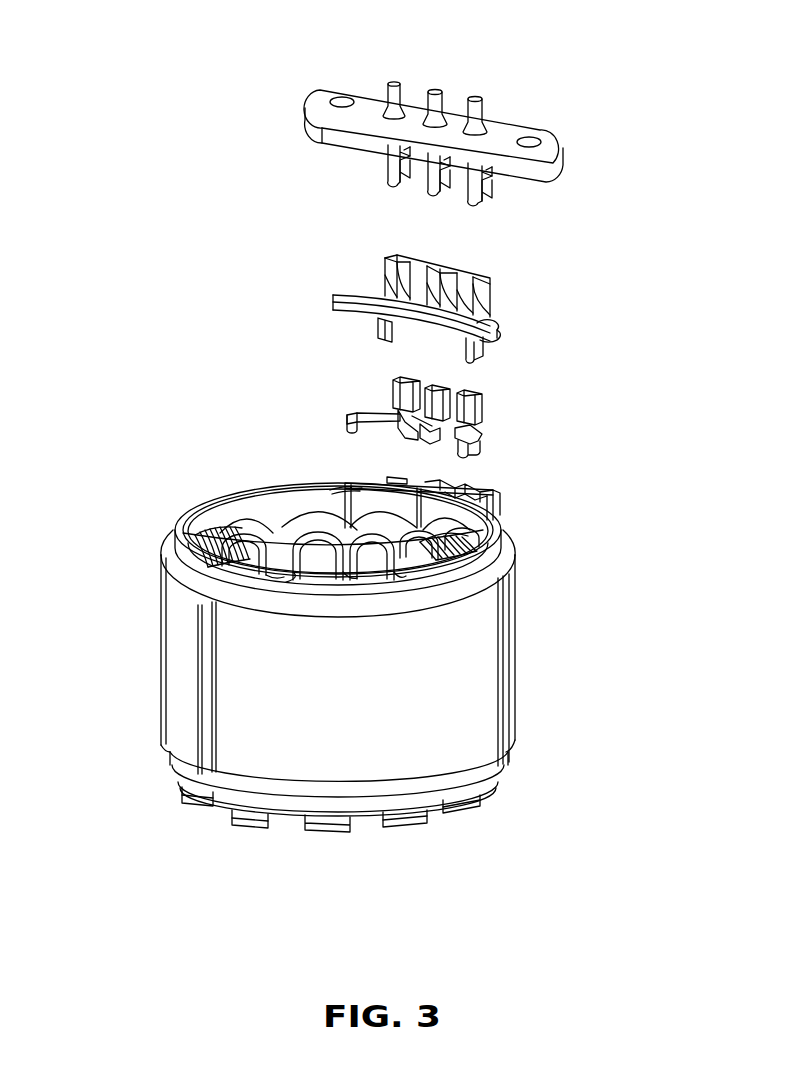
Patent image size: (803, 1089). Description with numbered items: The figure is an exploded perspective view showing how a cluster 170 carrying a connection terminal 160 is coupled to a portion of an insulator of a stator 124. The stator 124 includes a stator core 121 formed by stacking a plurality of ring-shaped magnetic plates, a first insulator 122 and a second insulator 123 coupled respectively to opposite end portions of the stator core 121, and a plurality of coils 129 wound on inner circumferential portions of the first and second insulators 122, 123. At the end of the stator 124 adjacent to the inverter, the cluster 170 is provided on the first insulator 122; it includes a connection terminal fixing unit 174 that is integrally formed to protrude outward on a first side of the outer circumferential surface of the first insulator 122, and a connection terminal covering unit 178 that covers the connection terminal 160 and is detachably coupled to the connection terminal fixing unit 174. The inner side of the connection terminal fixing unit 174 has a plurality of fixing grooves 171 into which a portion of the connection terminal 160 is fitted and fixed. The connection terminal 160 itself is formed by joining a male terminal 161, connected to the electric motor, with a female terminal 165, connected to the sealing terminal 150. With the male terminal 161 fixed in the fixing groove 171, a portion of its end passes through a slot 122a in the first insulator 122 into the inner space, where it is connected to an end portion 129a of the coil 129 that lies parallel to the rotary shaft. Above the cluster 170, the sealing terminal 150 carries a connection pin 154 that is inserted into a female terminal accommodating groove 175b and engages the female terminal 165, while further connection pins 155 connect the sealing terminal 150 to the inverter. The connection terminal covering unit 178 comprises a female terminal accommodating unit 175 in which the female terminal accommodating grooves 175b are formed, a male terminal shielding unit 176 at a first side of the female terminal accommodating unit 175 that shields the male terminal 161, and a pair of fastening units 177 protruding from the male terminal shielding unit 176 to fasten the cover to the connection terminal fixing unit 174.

The stator core 121 is at (176, 655).
The first insulator 122 is at (206, 500).
The slot 122a is at (358, 486).
The second insulator 123 is at (331, 834).
The stator 124 is at (545, 650).
The coil 129 is at (215, 548).
The end portion of the coil 129a is at (330, 530).
The sealing terminal 150 is at (590, 127).
The connection pin 154 is at (492, 178).
The connection pins 155 is at (401, 82).
The connection terminal 160 is at (372, 372).
The male terminal 161 is at (488, 444).
The female terminal 165 is at (486, 410).
The cluster 170 is at (645, 292).
The fixing groove 171 is at (392, 484).
The connection terminal fixing unit 174 is at (542, 500).
The female terminal accommodating unit 175 is at (385, 268).
The female terminal accommodating groove 175b is at (462, 272).
The male terminal shielding unit 176 is at (497, 334).
The fastening unit 177 is at (485, 356).
The connection terminal covering unit 178 is at (542, 304).